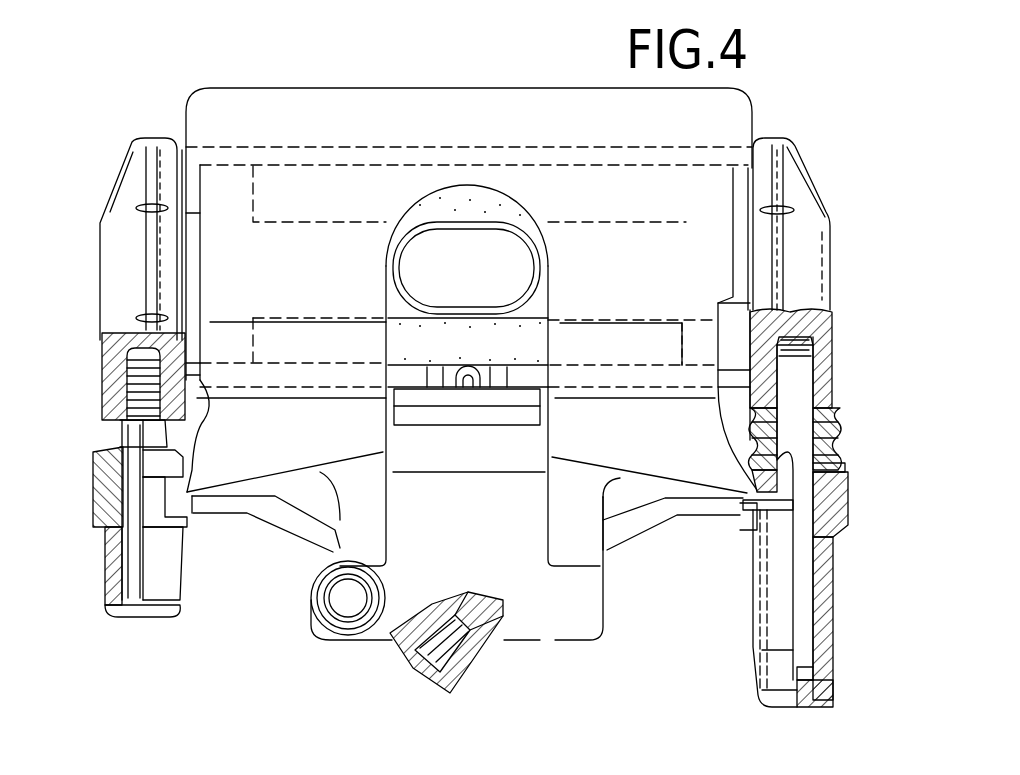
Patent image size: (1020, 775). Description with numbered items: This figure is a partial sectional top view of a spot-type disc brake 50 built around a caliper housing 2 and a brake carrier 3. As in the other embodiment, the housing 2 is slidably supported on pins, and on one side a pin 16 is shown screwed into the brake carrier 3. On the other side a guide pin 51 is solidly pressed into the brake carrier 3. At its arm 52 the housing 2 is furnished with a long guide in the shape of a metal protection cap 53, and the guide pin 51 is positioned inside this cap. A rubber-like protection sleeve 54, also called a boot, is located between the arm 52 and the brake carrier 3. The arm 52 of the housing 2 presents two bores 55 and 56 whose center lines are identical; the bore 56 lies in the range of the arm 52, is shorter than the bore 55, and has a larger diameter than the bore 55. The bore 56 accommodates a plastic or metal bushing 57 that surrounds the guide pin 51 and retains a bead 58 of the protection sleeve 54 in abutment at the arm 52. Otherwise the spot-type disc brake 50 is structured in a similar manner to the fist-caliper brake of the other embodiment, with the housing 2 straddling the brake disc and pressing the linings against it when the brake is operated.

The caliper housing 2 is at (612, 612).
The brake carrier 3 is at (84, 236).
The pin 16 is at (132, 443).
The spot-type disc brake 50 is at (836, 180).
The guide pin 51 is at (812, 366).
The arm 52 is at (837, 508).
The metal protection cap 53 is at (823, 640).
The protection sleeve 54 is at (840, 441).
The bore 55 is at (820, 583).
The bore 56 is at (848, 481).
The bushing 57 is at (843, 466).
The bead 58 is at (752, 473).